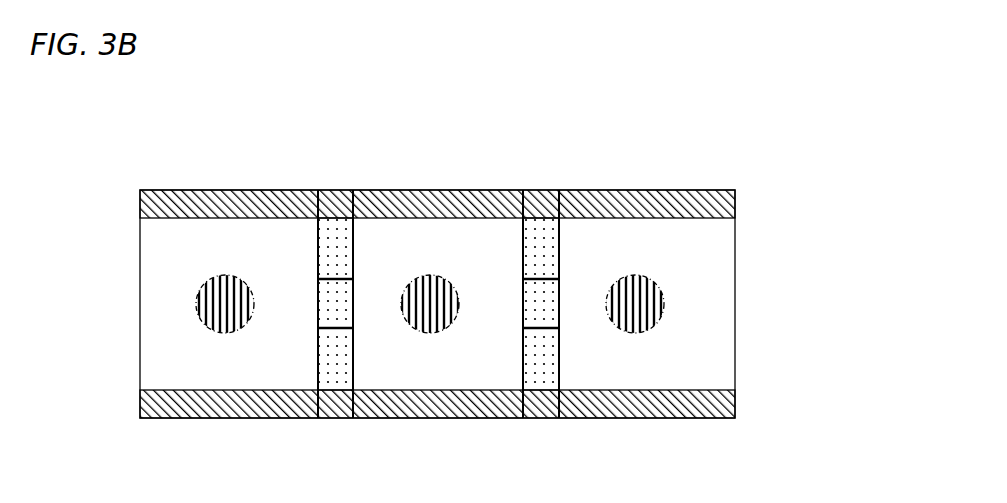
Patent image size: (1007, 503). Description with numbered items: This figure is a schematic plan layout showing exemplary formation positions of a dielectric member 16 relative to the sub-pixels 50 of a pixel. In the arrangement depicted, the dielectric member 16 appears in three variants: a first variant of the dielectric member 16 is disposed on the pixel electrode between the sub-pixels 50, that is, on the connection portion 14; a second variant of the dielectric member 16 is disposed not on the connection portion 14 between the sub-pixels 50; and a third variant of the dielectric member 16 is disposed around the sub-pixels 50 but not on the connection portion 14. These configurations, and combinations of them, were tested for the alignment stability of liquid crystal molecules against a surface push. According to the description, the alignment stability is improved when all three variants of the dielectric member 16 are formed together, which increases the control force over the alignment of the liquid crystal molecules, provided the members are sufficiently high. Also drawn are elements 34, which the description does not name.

The dielectric member 16 is at (332, 250).
The sub-pixel 50 is at (150, 240).
The wiring conductor 34 is at (228, 282).
The connection portion 14 is at (340, 312).